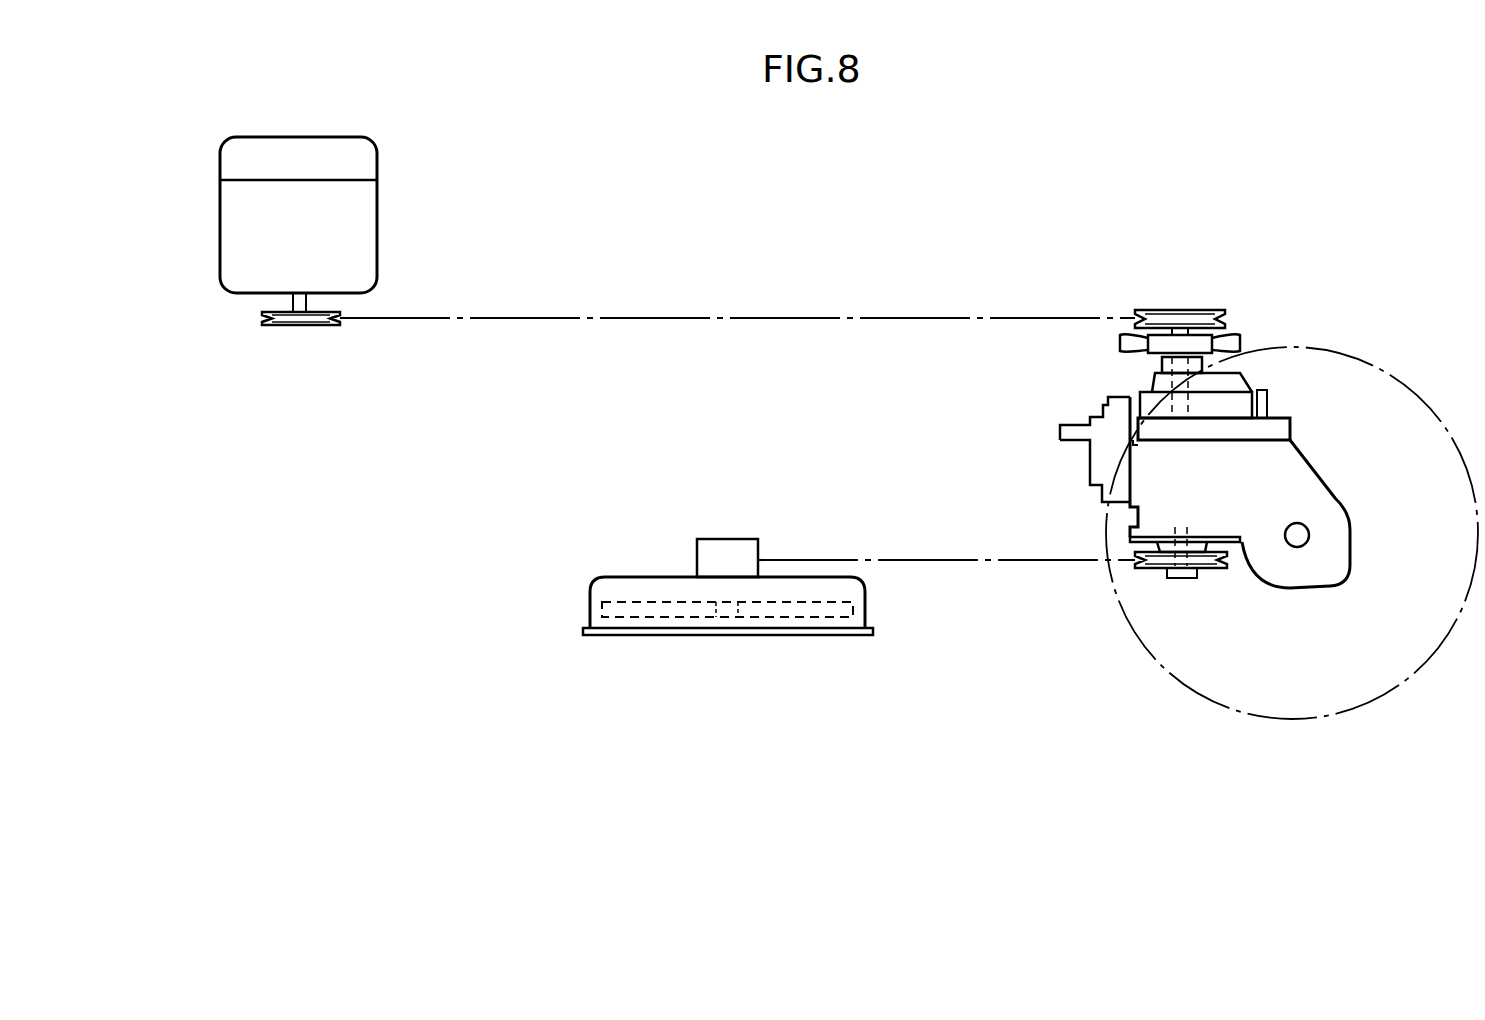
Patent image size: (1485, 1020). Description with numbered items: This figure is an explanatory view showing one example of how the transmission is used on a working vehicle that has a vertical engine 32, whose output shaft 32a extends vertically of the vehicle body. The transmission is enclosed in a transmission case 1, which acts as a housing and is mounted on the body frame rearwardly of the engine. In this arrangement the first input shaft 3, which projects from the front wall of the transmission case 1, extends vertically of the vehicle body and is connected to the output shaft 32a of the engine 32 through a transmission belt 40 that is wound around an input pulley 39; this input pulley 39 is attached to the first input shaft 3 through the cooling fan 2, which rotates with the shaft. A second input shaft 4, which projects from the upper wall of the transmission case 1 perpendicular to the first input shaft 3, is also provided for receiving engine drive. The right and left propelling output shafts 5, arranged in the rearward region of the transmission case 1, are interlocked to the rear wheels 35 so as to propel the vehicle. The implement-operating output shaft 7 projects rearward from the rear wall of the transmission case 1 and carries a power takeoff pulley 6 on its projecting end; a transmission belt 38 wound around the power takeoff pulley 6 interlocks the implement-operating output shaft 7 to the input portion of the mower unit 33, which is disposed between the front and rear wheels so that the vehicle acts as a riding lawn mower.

The transmission case 1 is at (1340, 495).
The cooling fan 2 is at (1235, 345).
The first input shaft 3 is at (1162, 362).
The second input shaft 4 is at (1083, 432).
The propelling output shafts 5 is at (1310, 535).
The power takeoff pulley 6 is at (1205, 582).
The implement-operating output shaft 7 is at (1182, 578).
The vertical engine 32 is at (353, 170).
The output shaft 32a is at (295, 303).
The mower unit 33 is at (617, 593).
The rear wheels 35 is at (1115, 590).
The transmission belt 38 is at (912, 558).
The input pulley 39 is at (1197, 313).
The transmission belt 40 is at (693, 322).